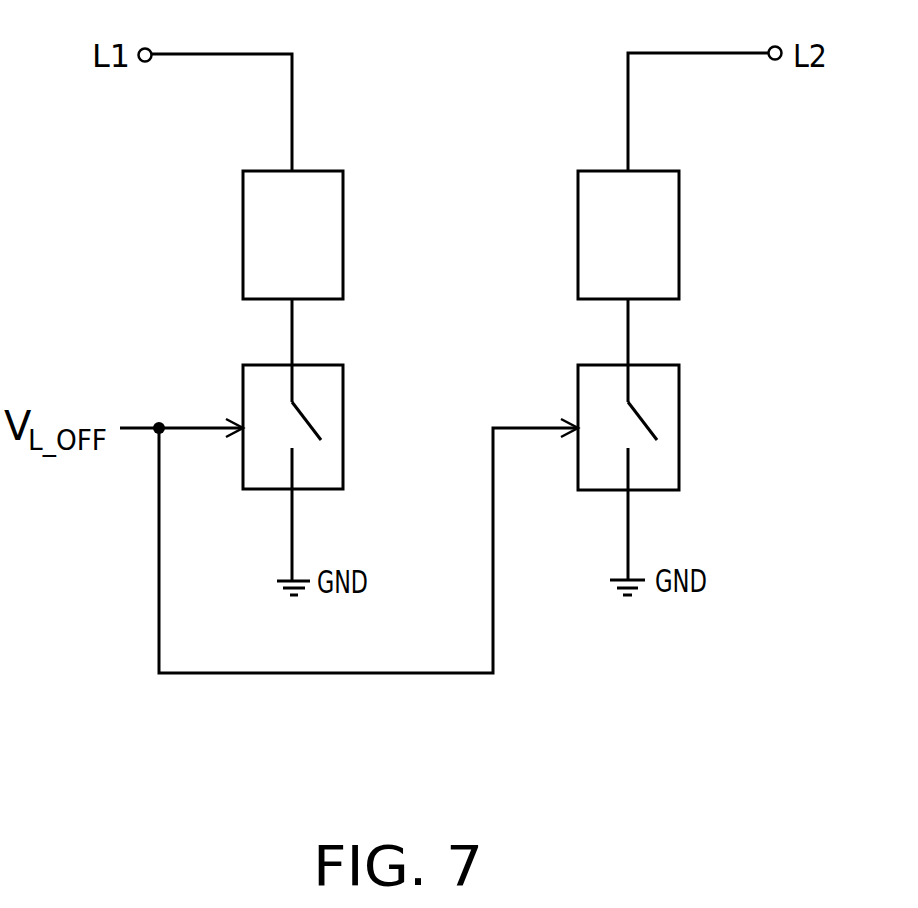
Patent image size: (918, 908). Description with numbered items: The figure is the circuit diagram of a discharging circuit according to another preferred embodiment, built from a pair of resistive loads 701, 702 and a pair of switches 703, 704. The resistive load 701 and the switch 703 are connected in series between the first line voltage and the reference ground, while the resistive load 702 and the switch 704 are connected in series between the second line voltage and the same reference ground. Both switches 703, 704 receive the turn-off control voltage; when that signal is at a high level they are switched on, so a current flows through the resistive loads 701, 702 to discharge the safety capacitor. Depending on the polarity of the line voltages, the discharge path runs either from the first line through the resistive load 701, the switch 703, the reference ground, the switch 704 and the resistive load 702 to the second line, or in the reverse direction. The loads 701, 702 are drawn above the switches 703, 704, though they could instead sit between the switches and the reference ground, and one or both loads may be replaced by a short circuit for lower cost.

The resistive load 701 is at (243, 233).
The resistive load 702 is at (679, 234).
The switch 703 is at (243, 378).
The switch 704 is at (679, 425).